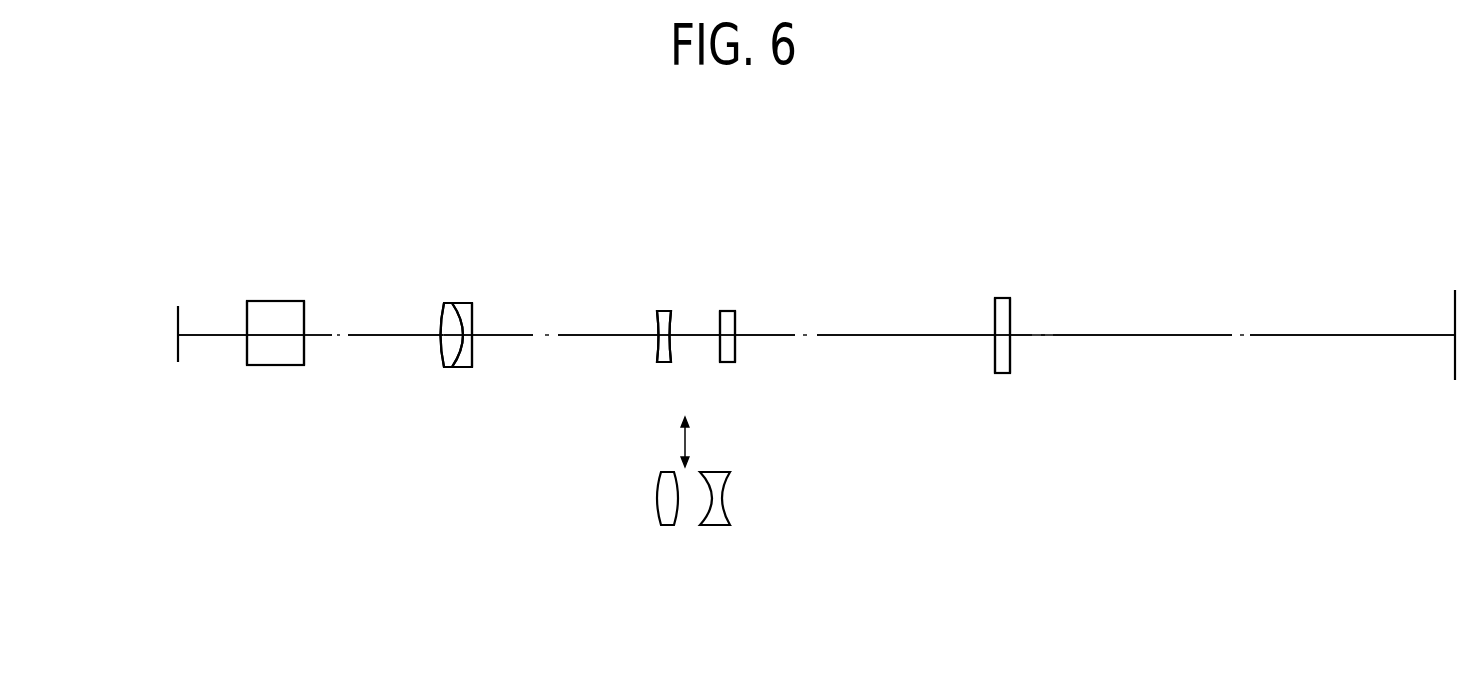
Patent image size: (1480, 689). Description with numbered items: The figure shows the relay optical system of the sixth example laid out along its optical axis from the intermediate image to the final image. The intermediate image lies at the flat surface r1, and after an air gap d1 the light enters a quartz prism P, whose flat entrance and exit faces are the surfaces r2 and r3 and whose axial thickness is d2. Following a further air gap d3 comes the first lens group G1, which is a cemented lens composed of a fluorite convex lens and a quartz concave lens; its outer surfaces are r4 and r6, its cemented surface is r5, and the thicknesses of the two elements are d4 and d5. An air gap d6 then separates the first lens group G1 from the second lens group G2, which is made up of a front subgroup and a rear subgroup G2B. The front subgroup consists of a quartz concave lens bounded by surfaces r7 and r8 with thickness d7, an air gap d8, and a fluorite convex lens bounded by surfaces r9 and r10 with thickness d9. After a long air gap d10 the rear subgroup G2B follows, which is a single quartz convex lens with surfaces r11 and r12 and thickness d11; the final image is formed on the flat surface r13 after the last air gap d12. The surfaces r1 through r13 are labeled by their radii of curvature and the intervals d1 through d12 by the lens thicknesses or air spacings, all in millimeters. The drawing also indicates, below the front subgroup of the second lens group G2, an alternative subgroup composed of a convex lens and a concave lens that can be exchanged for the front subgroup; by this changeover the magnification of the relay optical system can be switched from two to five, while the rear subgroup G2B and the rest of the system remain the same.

The intermediate image surface r1 is at (178, 306).
The prism entrance surface r2 is at (247, 303).
The prism exit surface r3 is at (305, 312).
The fourth lens surface r4 is at (443, 305).
The fifth lens surface r5 is at (457, 303).
The sixth lens surface r6 is at (472, 310).
The seventh lens surface r7 is at (657, 313).
The eighth lens surface r8 is at (671, 313).
The ninth lens surface r9 is at (720, 313).
The tenth lens surface r10 is at (735, 313).
The eleventh lens surface r11 is at (995, 310).
The twelfth lens surface r12 is at (1010, 315).
The final image surface r13 is at (1455, 300).
The air gap between intermediate image and prism d1 is at (210, 335).
The prism thickness d2 is at (288, 336).
The air gap between prism and first lens group d3 is at (365, 335).
The convex lens thickness of first lens group d4 is at (450, 337).
The concave lens thickness of first lens group d5 is at (465, 340).
The air gap between first and second lens groups d6 is at (527, 335).
The concave lens thickness of subgroup G2A(1) d7 is at (657, 347).
The air gap within subgroup G2A(1) d8 is at (697, 337).
The convex lens thickness of subgroup G2A(1) d9 is at (737, 343).
The air gap between subgroups G2A(1) and G2B d10 is at (885, 335).
The convex lens thickness of subgroup G2B d11 is at (1002, 340).
The air gap between subgroup G2B and final image d12 is at (1133, 336).
The prism P is at (267, 366).
The first lens group G1 is at (458, 368).
The subgroup G2B is at (999, 374).
The second lens group G2 is at (1041, 572).